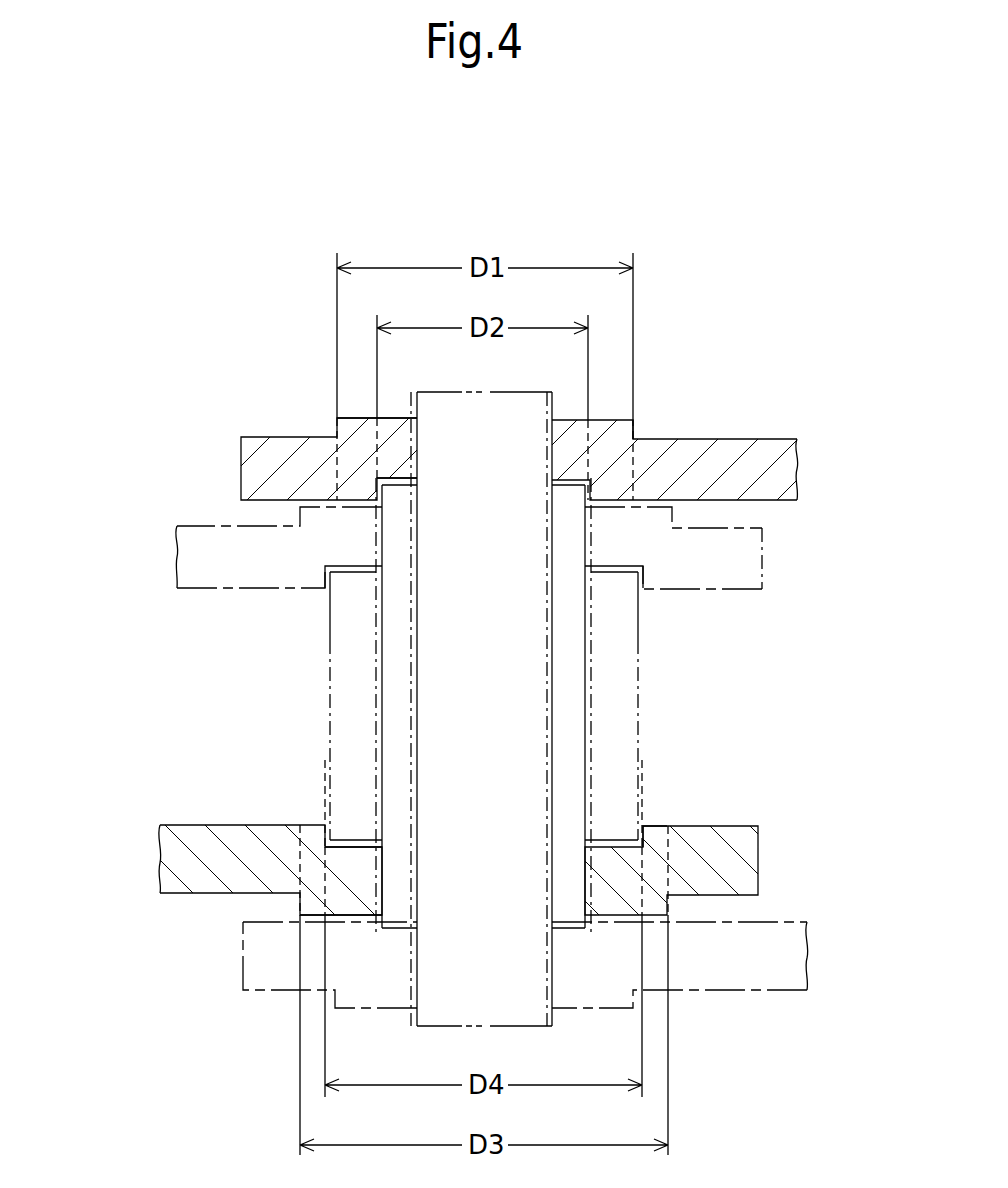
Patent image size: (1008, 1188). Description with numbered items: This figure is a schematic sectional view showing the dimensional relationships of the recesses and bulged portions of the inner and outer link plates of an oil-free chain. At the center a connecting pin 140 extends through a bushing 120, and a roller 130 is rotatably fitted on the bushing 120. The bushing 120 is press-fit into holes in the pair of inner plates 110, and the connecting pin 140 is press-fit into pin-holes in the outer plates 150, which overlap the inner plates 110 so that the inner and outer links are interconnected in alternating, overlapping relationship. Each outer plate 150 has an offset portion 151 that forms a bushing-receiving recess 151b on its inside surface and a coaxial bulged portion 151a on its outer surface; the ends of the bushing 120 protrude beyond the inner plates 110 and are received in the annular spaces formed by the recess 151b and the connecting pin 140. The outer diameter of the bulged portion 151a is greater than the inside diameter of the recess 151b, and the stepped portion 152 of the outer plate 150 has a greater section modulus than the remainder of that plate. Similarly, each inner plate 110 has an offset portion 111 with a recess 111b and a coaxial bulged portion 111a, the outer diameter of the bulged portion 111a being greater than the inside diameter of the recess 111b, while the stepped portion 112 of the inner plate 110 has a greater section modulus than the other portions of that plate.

The inner plate 110 is at (727, 558).
The offset portion 111 is at (102, 760).
The bulged portion 111a is at (363, 915).
The recess 111b is at (363, 860).
The stepped portion 112 is at (658, 842).
The bushing 120 is at (573, 706).
The roller 130 is at (617, 749).
The connecting pin 140 is at (494, 659).
The outer plate 150 is at (757, 473).
The offset portion 151 is at (113, 390).
The bulged portion 151a is at (357, 418).
The bushing-receiving recess 151b is at (400, 478).
The stepped portion 152 is at (608, 460).